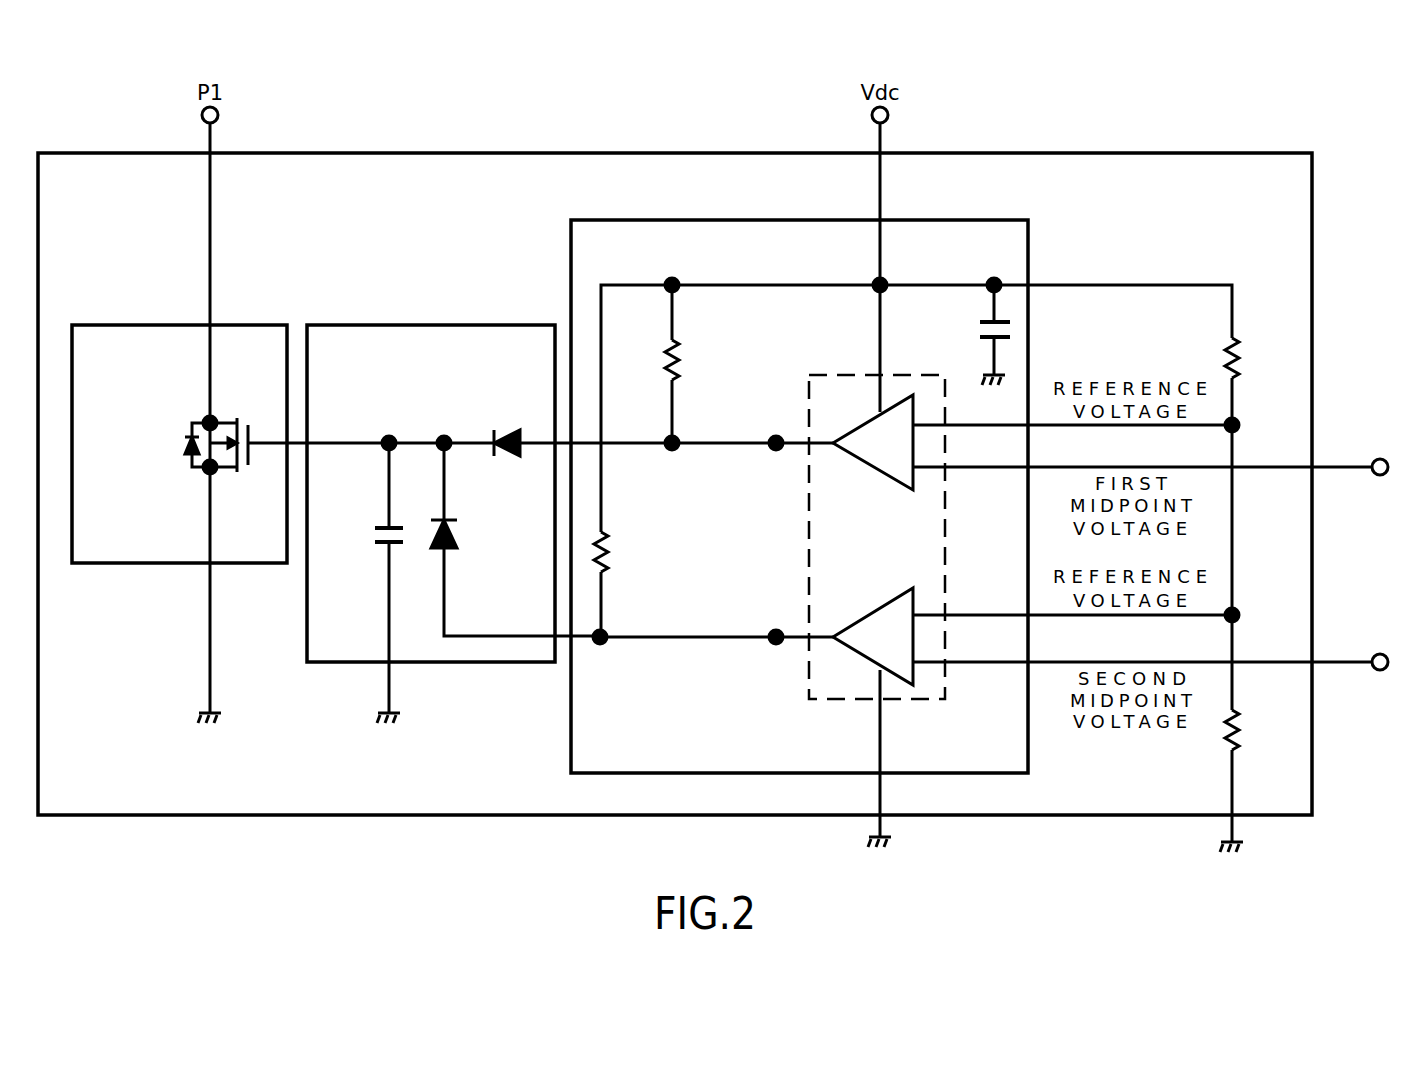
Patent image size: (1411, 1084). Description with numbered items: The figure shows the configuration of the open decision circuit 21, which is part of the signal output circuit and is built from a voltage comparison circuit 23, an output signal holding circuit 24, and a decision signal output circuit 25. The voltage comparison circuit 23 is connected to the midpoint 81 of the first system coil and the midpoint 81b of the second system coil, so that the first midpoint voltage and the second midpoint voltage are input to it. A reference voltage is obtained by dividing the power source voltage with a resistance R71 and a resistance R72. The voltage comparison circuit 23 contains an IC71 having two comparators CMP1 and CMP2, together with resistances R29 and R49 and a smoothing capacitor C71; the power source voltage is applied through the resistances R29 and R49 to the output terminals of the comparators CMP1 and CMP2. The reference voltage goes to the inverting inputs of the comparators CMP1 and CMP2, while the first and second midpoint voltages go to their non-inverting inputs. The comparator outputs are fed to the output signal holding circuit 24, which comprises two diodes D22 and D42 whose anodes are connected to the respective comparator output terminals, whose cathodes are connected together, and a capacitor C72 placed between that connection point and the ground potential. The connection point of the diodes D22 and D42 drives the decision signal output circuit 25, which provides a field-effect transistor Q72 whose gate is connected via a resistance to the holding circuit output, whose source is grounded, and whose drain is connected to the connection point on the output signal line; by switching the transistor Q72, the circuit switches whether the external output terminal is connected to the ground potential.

The open decision circuit 21 is at (1163, 152).
The voltage comparison circuit 23 is at (640, 220).
The output signal holding circuit 24 is at (415, 323).
The decision signal output circuit 25 is at (118, 323).
The midpoint of the first system coil 81 is at (1385, 456).
The midpoint of the second system coil 81b is at (1378, 672).
The field-effect transistor Q72 is at (185, 445).
The capacitor C72 is at (370, 579).
The diode D42 is at (515, 536).
The diode D22 is at (512, 426).
The resistance R29 is at (647, 367).
The resistance R49 is at (630, 552).
The IC IC71 is at (876, 517).
The comparator CMP1 is at (873, 454).
The comparator CMP2 is at (873, 625).
The capacitor C71 is at (974, 335).
The resistance R71 is at (1204, 358).
The resistance R72 is at (1204, 734).